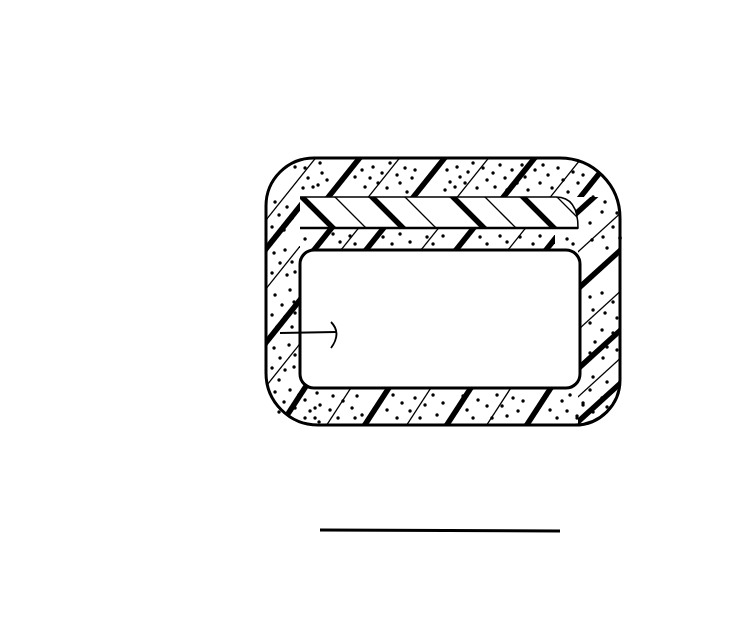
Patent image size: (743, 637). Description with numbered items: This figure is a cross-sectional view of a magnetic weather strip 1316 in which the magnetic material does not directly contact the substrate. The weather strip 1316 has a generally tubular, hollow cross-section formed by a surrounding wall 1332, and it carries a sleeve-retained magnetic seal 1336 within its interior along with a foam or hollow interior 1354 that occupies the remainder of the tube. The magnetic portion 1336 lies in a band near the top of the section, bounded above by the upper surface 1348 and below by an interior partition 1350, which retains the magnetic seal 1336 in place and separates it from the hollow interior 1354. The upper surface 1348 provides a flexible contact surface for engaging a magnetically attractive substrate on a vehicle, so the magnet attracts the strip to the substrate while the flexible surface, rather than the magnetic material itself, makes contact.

The magnetic weather strip 1316 is at (515, 100).
The wall of profile 1332 is at (277, 302).
The upper surface 1348 is at (418, 157).
The magnetic seal 1336 is at (330, 212).
The interior partition 1350 is at (582, 271).
The foam or hollow interior 1354 is at (280, 333).